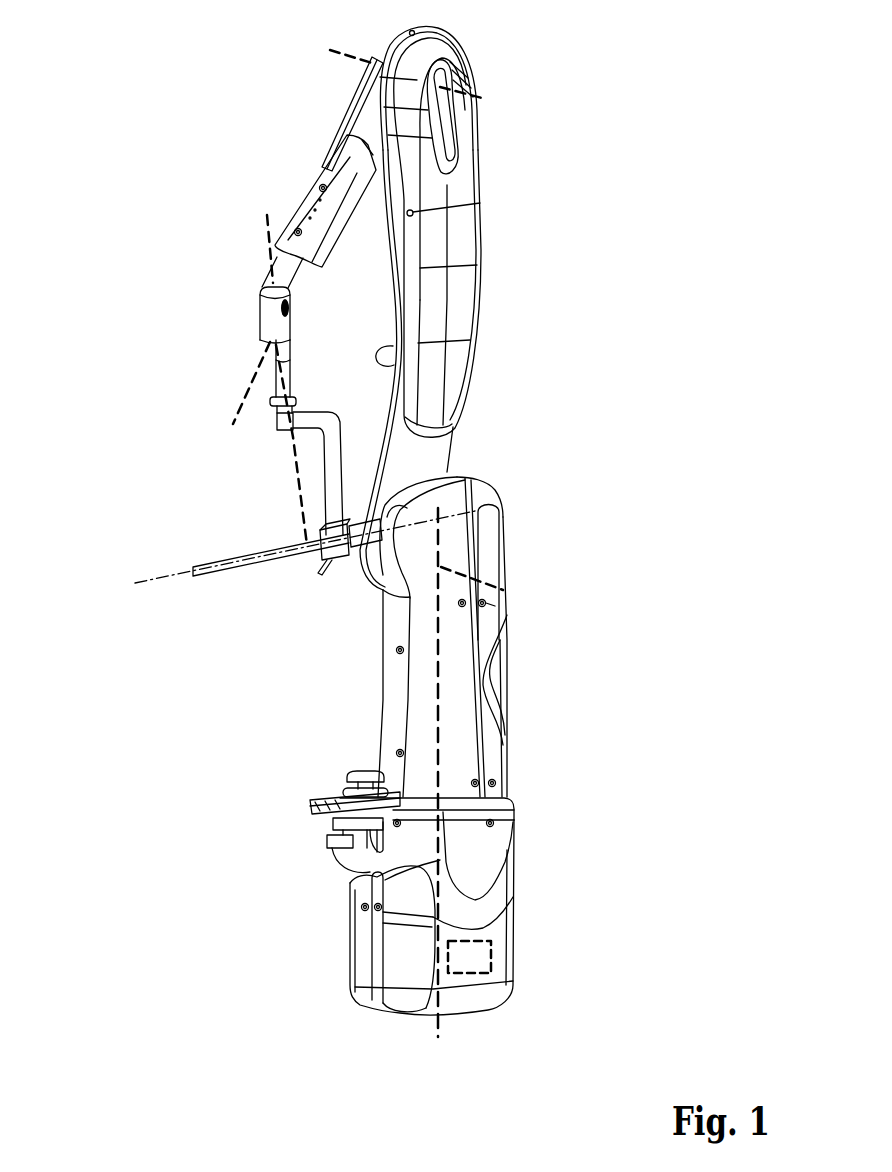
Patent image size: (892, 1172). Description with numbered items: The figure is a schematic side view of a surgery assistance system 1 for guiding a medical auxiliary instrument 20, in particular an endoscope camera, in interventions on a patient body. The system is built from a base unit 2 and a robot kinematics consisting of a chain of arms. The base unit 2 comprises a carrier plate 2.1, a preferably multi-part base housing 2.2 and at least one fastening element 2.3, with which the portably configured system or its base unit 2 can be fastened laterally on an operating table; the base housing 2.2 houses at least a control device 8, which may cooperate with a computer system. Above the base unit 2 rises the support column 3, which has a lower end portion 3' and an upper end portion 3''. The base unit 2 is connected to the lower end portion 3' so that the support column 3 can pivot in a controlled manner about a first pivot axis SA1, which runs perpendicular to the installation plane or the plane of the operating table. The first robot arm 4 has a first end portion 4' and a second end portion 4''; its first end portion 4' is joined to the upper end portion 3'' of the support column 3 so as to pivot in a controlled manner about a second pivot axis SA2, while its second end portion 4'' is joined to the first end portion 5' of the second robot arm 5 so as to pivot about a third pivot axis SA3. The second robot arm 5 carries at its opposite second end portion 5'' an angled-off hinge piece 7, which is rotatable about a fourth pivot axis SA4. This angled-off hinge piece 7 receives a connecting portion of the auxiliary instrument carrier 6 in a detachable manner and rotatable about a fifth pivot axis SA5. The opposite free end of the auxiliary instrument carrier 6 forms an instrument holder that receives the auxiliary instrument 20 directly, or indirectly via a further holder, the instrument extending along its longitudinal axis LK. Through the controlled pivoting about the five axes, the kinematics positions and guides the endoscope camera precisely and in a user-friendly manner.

The surgery assistance system 1 is at (648, 233).
The base unit 2 is at (584, 830).
The carrier plate 2.1 is at (513, 810).
The base housing 2.2 is at (473, 880).
The fastening element 2.3 is at (307, 835).
The support column 3 is at (520, 637).
The lower end portion 3' is at (323, 693).
The upper end portion 3'' is at (517, 537).
The first robot arm 4 is at (490, 234).
The first end portion 4' is at (541, 449).
The second end portion 4'' is at (541, 117).
The second robot arm 5 is at (259, 199).
The first end portion 5' is at (291, 105).
The second end portion 5'' is at (208, 259).
The auxiliary instrument carrier 6 is at (277, 493).
The angled-off hinge piece 7 is at (260, 322).
The control device 8 is at (472, 960).
The auxiliary instrument 20 is at (258, 585).
The longitudinal axis LK is at (287, 556).
The first pivot axis SA1 is at (438, 793).
The second pivot axis SA2 is at (505, 588).
The third pivot axis SA3 is at (441, 88).
The fourth pivot axis SA4 is at (224, 401).
The fifth pivot axis SA5 is at (261, 364).